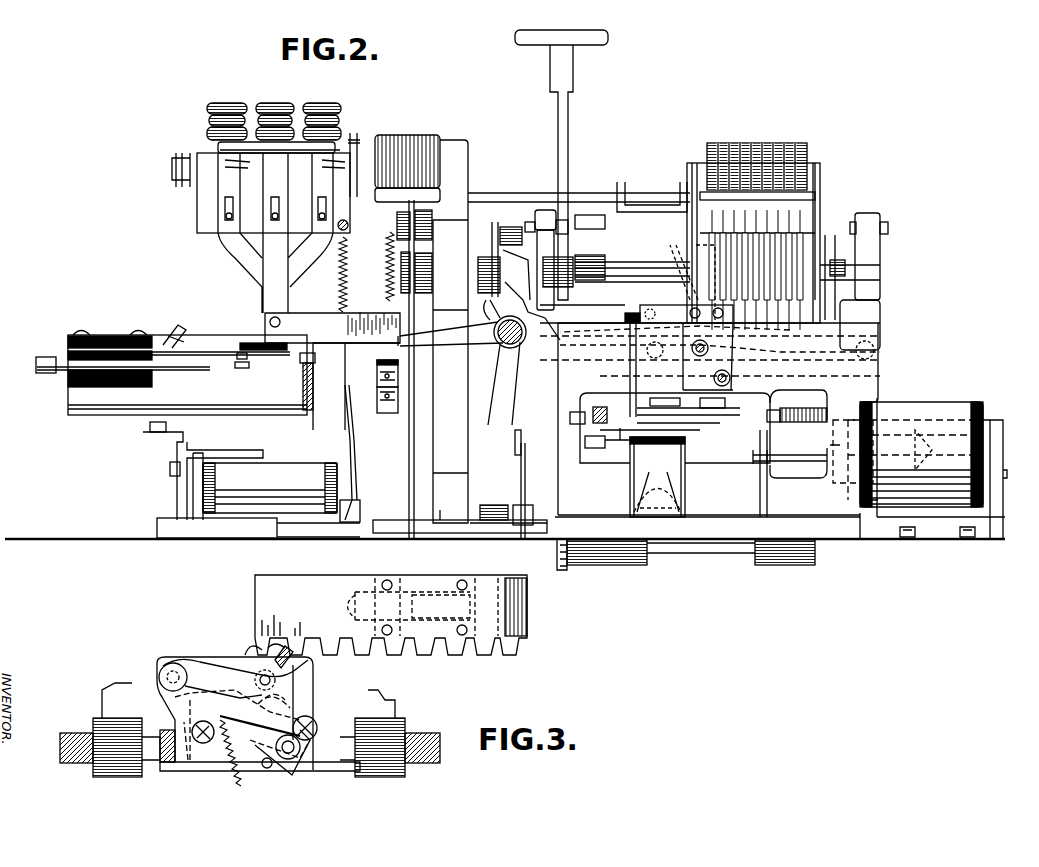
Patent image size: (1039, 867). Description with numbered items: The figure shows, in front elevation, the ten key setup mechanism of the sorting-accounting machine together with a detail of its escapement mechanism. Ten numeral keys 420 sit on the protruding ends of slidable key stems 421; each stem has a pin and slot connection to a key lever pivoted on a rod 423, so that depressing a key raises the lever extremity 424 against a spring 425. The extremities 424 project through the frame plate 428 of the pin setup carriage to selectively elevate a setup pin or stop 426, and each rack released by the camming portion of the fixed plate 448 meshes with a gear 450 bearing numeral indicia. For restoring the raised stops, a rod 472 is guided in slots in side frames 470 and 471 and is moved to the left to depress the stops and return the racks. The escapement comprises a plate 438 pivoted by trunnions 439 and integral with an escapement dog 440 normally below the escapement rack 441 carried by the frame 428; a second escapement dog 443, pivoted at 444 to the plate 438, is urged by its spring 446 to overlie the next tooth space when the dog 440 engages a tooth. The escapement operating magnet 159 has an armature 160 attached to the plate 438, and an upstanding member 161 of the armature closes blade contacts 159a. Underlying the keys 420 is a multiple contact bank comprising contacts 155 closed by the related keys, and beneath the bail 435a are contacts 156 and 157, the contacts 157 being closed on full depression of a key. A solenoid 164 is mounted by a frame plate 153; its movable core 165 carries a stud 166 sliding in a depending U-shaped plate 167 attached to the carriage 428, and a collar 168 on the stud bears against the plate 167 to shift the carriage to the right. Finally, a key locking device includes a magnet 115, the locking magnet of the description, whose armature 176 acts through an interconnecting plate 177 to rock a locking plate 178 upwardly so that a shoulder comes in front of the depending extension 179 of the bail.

In FIG. 2, the numeral keys 420 is at (318, 108).
In FIG. 2, the key stems 421 is at (275, 265).
In FIG. 2, the spring 425 is at (340, 267).
In FIG. 2, the side frame 470 is at (543, 218).
In FIG. 2, the rod 472 is at (600, 272).
In FIG. 2, the gear 450 is at (780, 125).
In FIG. 2, the frame plate of the pin setup carriage 428 is at (815, 197).
In FIG. 2, the side frame 471 is at (867, 220).
In FIG. 2, the blade contacts 159a is at (645, 309).
In FIG. 2, the fixed plate 448 is at (688, 302).
In FIG. 2, the upstanding member 161 is at (628, 330).
In FIG. 2, the extremity of the key lever 424 is at (720, 345).
In FIG. 2, the setup pins or stops 426 is at (780, 330).
In FIG. 2, the bail 435a is at (376, 340).
In FIG. 2, the rod 423 is at (500, 354).
In FIG. 2, the contacts 155 is at (258, 366).
In FIG. 2, the contacts 156 is at (377, 378).
In FIG. 2, the contacts 157 is at (377, 395).
In FIG. 2, the magnet 115 is at (300, 449).
In FIG. 2, the armature 176 is at (356, 490).
In FIG. 2, the depending extension 179 is at (519, 432).
In FIG. 2, the locking plate 178 is at (524, 503).
In FIG. 2, the interconnecting plate 177 is at (428, 540).
In FIG. 2, the escapement rack 441 is at (805, 424).
In FIG. 3, the escapement rack 441 is at (488, 578).
In FIG. 2, the armature 160 is at (680, 418).
In FIG. 3, the armature 160 is at (306, 778).
In FIG. 2, the plate 438 is at (660, 428).
In FIG. 3, the plate 438 is at (200, 775).
In FIG. 2, the escapement operating magnet 159 is at (686, 478).
In FIG. 2, the stud 166 is at (760, 464).
In FIG. 2, the U-shaped plate 167 is at (798, 478).
In FIG. 2, the collar 168 is at (826, 476).
In FIG. 2, the solenoid 164 is at (912, 406).
In FIG. 2, the movable core 165 is at (935, 444).
In FIG. 2, the frame plate 153 is at (982, 536).
In FIG. 3, the escapement dog 440 is at (283, 658).
In FIG. 3, the escapement dog 443 is at (288, 660).
In FIG. 3, the pivot 444 is at (310, 728).
In FIG. 3, the trunnions 439 is at (150, 777).
In FIG. 3, the spring 446 is at (263, 770).